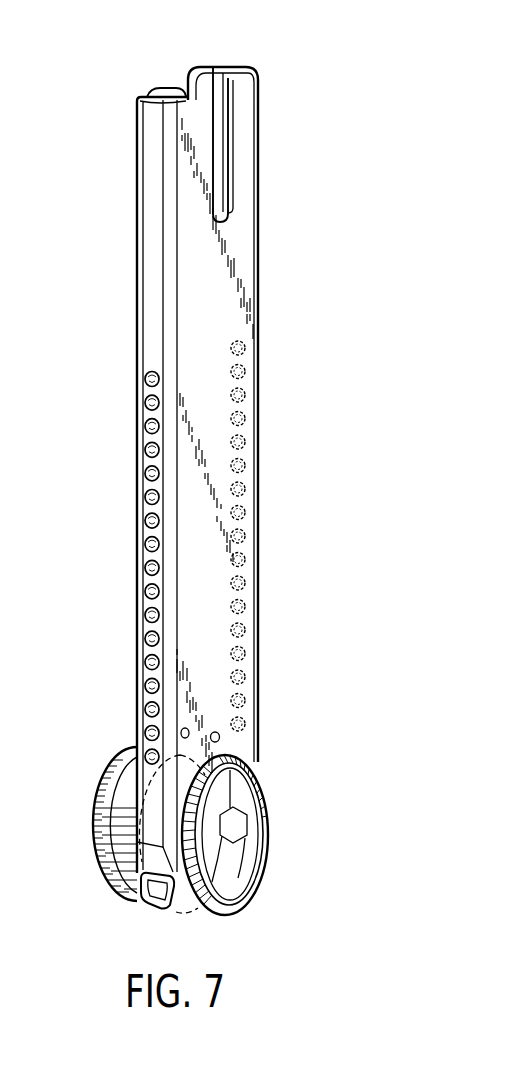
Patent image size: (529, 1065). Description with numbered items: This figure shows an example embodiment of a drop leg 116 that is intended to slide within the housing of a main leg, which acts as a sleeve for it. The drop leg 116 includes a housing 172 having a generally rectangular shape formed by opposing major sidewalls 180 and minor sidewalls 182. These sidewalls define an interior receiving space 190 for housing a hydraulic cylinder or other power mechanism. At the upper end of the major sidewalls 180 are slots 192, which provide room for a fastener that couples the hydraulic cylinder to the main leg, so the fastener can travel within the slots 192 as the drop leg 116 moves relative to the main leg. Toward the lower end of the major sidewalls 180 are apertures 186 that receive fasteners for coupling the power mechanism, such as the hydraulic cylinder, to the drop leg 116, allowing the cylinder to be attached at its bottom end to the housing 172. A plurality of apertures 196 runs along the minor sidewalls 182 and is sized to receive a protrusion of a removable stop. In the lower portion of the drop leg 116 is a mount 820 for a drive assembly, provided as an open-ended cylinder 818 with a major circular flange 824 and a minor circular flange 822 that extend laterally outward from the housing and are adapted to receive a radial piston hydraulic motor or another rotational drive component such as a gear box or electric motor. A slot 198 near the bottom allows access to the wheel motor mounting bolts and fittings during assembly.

The drop leg 116 is at (70, 171).
The housing 172 is at (258, 208).
The major sidewalls 180 is at (155, 90).
The minor sidewalls 182 is at (238, 67).
The apertures 186 is at (180, 732).
The interior receiving space 190 is at (212, 84).
The slots 192 is at (175, 88).
The apertures 196 is at (148, 640).
The slot 198 is at (173, 903).
The open-ended cylinder 818 is at (103, 880).
The mount 820 is at (276, 791).
The minor circular flange 822 is at (267, 840).
The major circular flange 824 is at (113, 800).